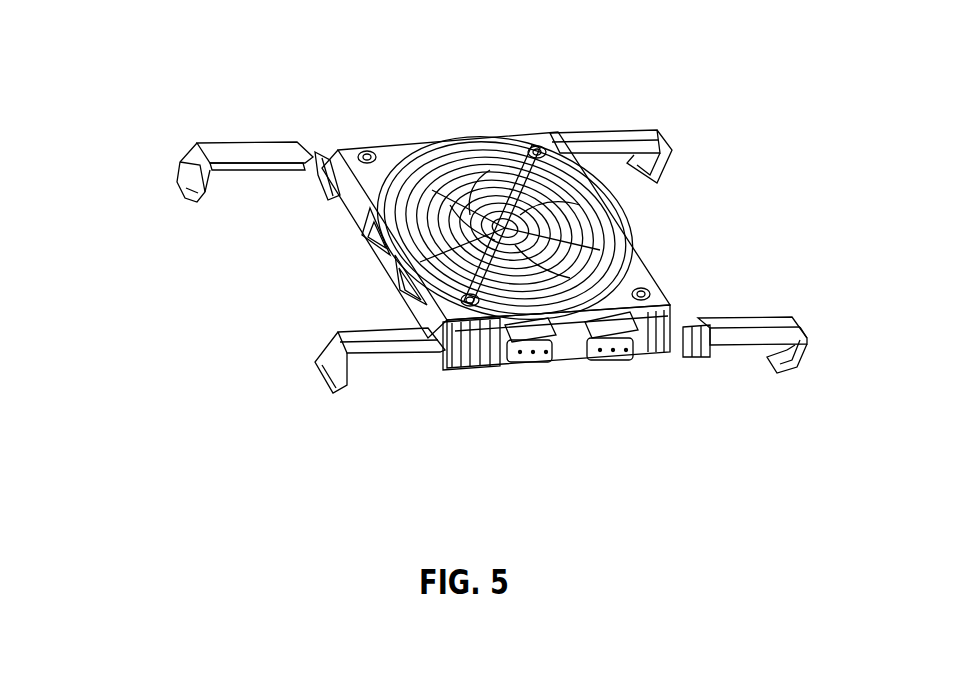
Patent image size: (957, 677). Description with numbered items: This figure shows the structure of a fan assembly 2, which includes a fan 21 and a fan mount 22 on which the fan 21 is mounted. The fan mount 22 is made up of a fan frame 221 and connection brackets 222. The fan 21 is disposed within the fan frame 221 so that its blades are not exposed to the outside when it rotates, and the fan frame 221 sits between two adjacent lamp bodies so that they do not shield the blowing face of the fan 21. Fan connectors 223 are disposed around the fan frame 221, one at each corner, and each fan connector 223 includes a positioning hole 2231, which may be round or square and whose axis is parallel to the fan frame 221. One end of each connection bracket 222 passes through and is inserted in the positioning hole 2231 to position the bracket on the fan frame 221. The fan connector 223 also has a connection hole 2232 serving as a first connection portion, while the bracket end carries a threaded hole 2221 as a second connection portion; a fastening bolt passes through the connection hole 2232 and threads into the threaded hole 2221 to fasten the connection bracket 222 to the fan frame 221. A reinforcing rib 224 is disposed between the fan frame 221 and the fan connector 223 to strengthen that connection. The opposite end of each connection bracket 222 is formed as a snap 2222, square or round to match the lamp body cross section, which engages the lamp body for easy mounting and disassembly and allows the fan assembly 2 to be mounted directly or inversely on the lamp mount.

The fan assembly 2 is at (456, 84).
The fan 21 is at (628, 238).
The fan mount 22 is at (262, 358).
The fan frame 221 is at (360, 247).
The connection bracket 222 is at (174, 203).
The fan connector 223 is at (312, 165).
The reinforcing rib 224 is at (323, 182).
The threaded hole 2221 is at (688, 348).
The snap 2222 is at (790, 360).
The positioning hole 2231 is at (473, 370).
The connection hole 2232 is at (500, 365).